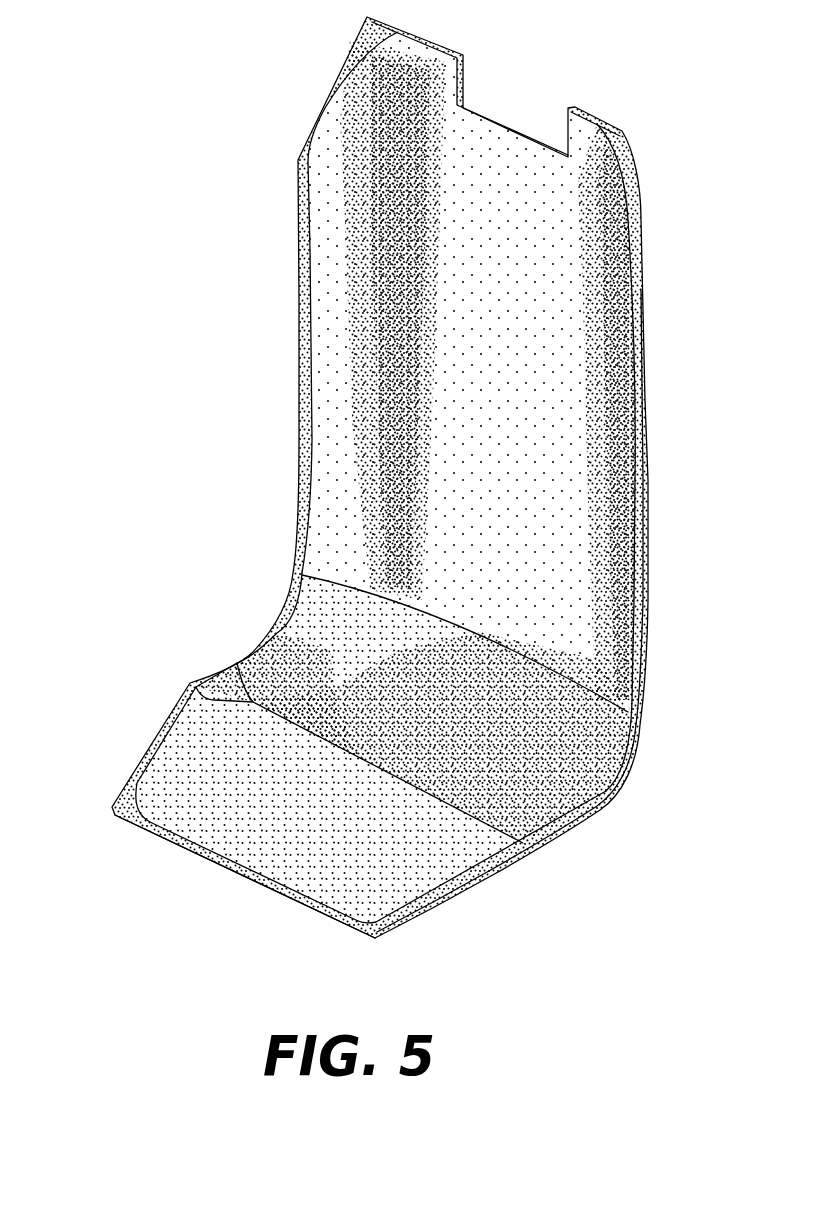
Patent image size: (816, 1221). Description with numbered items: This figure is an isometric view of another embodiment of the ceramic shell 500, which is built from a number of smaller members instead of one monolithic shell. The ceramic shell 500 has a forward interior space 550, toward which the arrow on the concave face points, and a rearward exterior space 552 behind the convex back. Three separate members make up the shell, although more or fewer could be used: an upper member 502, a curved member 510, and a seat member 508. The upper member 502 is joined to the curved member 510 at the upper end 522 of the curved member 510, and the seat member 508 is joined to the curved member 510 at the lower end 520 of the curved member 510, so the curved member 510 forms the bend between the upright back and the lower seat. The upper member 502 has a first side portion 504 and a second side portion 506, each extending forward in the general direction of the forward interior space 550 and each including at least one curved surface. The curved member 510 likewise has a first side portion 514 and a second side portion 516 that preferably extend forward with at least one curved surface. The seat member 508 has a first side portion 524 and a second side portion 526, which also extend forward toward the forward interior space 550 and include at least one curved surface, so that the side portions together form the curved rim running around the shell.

The ceramic shell 500 is at (258, 167).
The upper member 502 is at (511, 288).
The first side portion 504 is at (608, 210).
The second side portion 506 is at (343, 163).
The seat member 508 is at (330, 817).
The curved member 510 is at (437, 710).
The first side portion 514 is at (623, 778).
The second side portion 516 is at (322, 658).
The lower end 520 is at (190, 683).
The upper end 522 is at (337, 577).
The first side portion 524 is at (427, 867).
The second side portion 526 is at (172, 770).
The forward interior space 550 is at (433, 340).
The rearward exterior space 552 is at (680, 552).